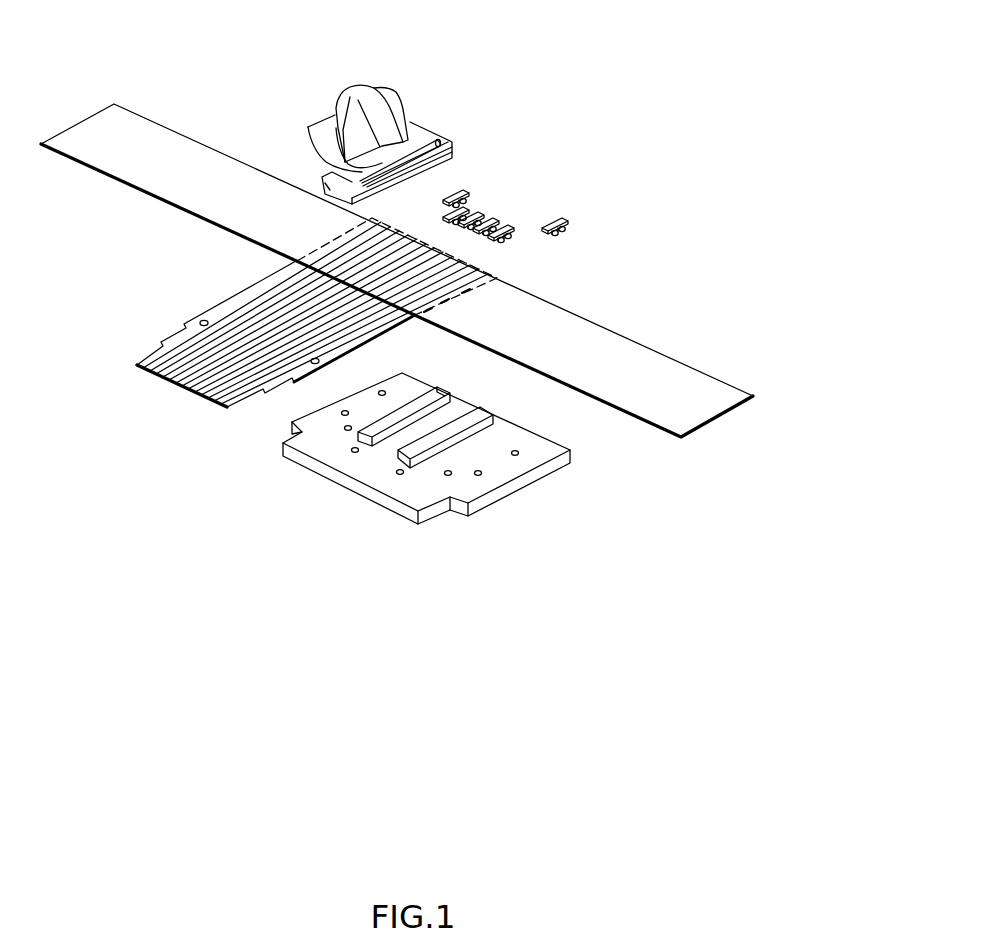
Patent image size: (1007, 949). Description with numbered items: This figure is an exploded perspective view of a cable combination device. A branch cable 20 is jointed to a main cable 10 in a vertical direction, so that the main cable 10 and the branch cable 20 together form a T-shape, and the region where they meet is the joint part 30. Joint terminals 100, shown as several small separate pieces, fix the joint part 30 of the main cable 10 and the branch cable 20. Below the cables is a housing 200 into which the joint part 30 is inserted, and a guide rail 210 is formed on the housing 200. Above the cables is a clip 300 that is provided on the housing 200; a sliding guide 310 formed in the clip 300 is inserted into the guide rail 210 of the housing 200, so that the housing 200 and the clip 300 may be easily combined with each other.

The main cable 10 is at (687, 366).
The branch cable 20 is at (173, 386).
The joint part 30 is at (303, 255).
The joint terminals 100 is at (567, 217).
The housing 200 is at (553, 483).
The guide rail 210 is at (398, 458).
The clip 300 is at (407, 102).
The sliding guide 310 is at (449, 137).